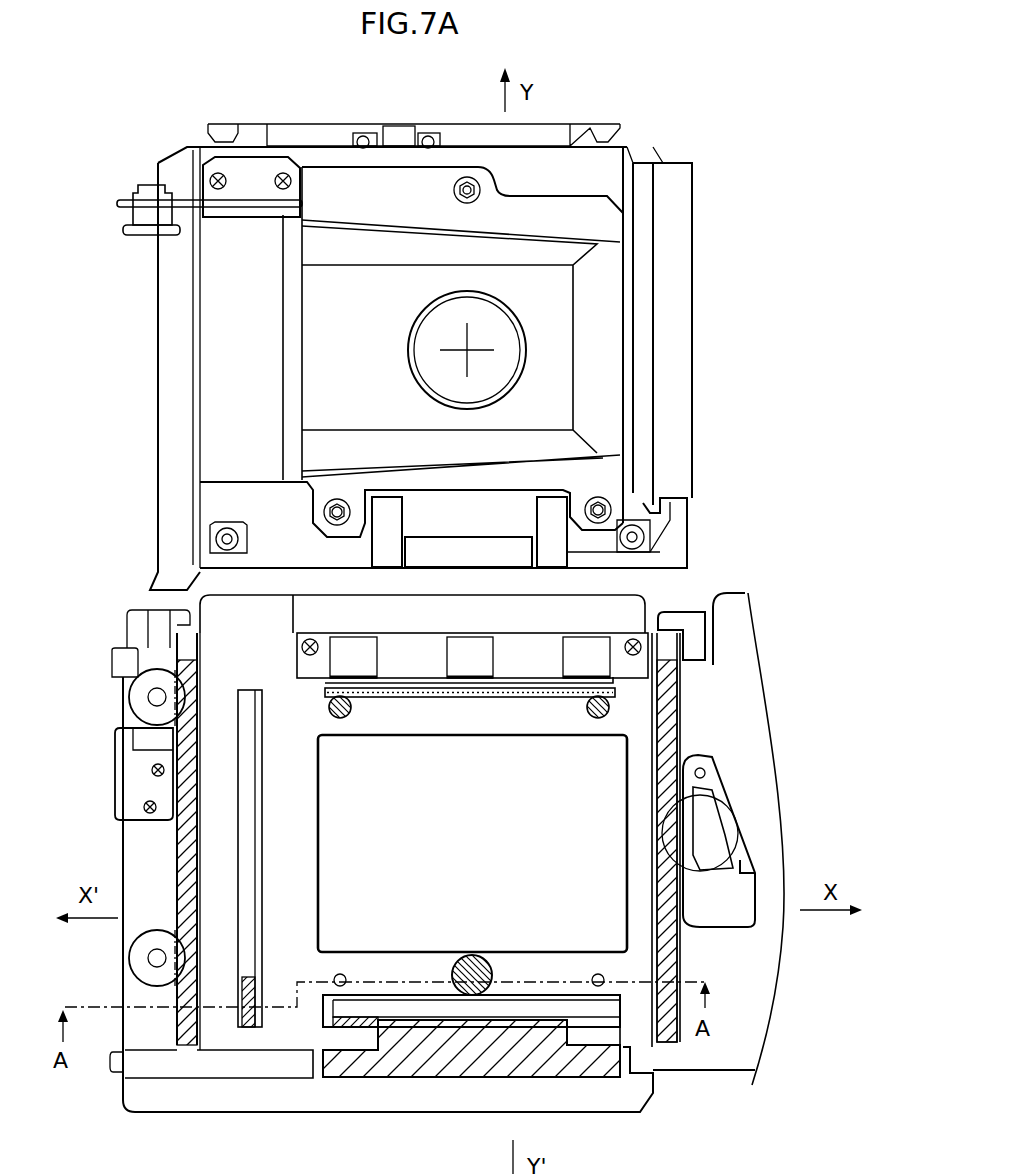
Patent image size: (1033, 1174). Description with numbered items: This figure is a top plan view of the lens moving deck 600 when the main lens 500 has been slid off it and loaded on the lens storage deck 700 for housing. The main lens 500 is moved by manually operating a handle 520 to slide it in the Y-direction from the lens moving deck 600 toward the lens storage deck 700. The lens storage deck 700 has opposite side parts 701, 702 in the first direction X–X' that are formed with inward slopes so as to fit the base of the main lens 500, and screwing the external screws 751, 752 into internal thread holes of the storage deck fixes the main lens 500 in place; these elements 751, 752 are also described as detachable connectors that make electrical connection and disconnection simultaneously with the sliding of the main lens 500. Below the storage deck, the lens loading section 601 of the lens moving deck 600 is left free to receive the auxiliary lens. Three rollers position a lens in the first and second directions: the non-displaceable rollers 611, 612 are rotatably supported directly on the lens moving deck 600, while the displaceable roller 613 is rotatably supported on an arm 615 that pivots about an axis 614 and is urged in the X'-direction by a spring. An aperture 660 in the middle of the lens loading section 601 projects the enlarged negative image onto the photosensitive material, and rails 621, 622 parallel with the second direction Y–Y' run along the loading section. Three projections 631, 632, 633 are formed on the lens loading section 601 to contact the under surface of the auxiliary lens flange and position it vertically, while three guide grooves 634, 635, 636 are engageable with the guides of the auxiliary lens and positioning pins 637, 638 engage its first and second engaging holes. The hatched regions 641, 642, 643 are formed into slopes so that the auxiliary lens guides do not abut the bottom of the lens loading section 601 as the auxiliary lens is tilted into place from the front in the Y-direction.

The main lens 500 is at (594, 190).
The handle 520 is at (466, 552).
The lens moving deck 600 is at (716, 1081).
The lens loading section 601 is at (348, 1100).
The non-displaceable roller 611 is at (138, 697).
The non-displaceable roller 612 is at (138, 958).
The displaceable roller 613 is at (743, 828).
The axis 614 is at (705, 773).
The arm 615 is at (743, 903).
The rail 621 is at (190, 1030).
The rail 622 is at (668, 1042).
The projection 631 is at (337, 700).
The projection 632 is at (613, 710).
The projection 633 is at (478, 963).
The guide groove 634 is at (432, 1002).
The guide groove 635 is at (250, 842).
The guide groove 636 is at (640, 685).
The positioning pin 637 is at (342, 975).
The positioning pin 638 is at (597, 973).
The sloped region 641 is at (513, 1060).
The sloped region 642 is at (250, 1027).
The sloped region 643 is at (420, 690).
The aperture 660 is at (624, 937).
The lens storage deck 700 is at (694, 544).
The side part 701 is at (168, 392).
The side part 702 is at (645, 360).
The external screw 751 is at (145, 222).
The external screw 752 is at (130, 782).